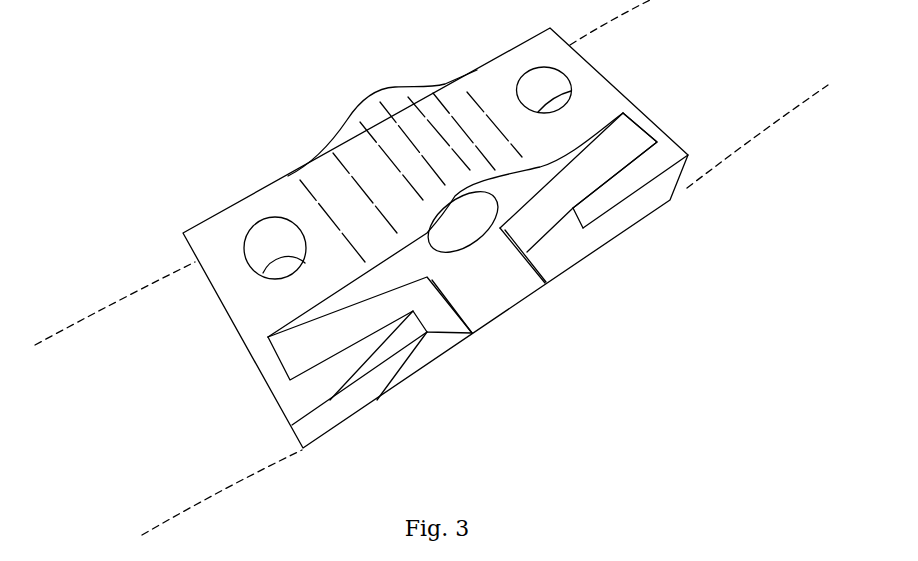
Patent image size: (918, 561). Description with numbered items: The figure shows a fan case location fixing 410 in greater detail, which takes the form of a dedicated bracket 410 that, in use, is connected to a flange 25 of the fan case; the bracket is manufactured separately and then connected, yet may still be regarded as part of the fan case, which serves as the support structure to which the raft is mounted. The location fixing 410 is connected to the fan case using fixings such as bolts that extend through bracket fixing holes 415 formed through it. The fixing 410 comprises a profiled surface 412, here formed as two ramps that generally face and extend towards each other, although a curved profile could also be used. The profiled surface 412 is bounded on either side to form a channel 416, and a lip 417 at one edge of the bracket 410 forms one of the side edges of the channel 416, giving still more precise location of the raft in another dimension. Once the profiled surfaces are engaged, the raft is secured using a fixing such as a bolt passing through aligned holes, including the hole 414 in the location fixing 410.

The flange 25 is at (431, 267).
The fan case location fixing 410 is at (608, 332).
The profiled surface 412 is at (623, 155).
The hole 414 is at (453, 227).
The bracket fixing holes 415 is at (540, 92).
The channel 416 is at (320, 353).
The lip 417 is at (607, 227).